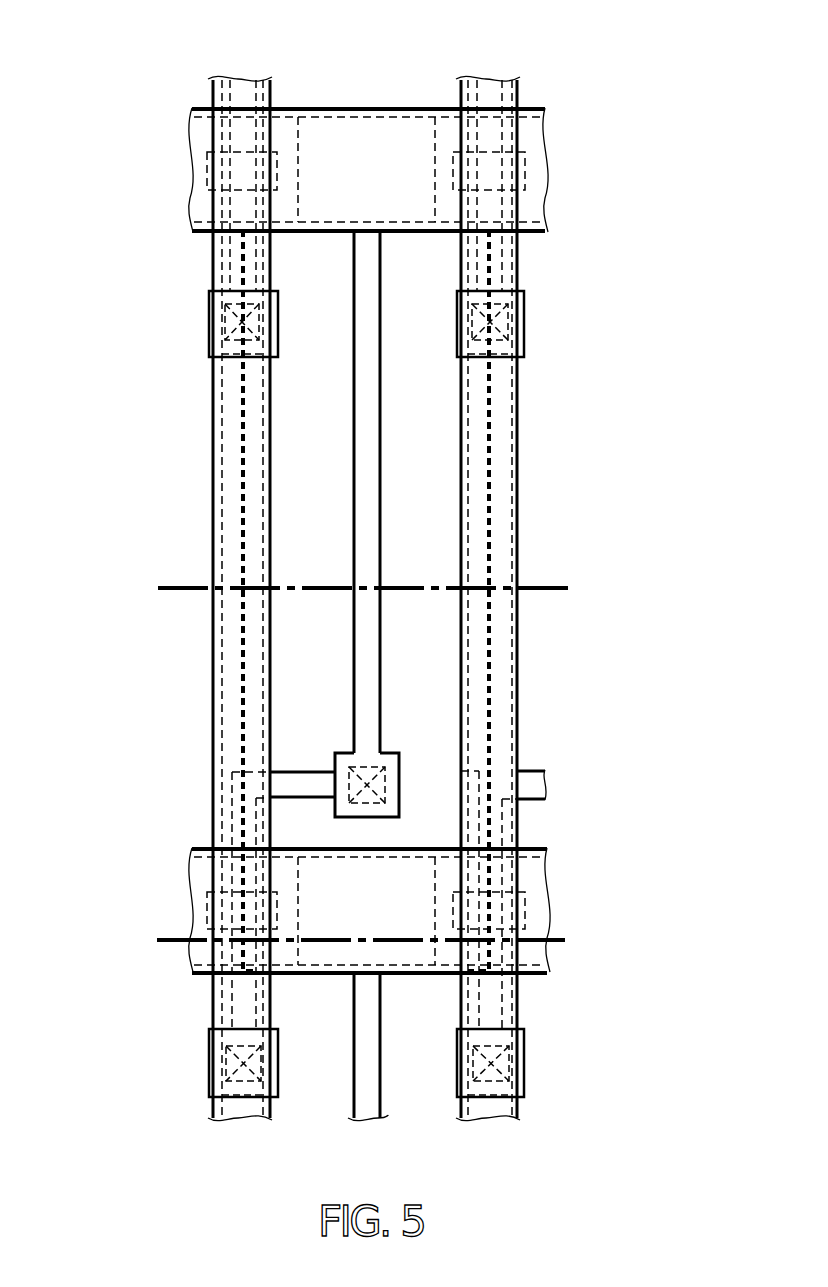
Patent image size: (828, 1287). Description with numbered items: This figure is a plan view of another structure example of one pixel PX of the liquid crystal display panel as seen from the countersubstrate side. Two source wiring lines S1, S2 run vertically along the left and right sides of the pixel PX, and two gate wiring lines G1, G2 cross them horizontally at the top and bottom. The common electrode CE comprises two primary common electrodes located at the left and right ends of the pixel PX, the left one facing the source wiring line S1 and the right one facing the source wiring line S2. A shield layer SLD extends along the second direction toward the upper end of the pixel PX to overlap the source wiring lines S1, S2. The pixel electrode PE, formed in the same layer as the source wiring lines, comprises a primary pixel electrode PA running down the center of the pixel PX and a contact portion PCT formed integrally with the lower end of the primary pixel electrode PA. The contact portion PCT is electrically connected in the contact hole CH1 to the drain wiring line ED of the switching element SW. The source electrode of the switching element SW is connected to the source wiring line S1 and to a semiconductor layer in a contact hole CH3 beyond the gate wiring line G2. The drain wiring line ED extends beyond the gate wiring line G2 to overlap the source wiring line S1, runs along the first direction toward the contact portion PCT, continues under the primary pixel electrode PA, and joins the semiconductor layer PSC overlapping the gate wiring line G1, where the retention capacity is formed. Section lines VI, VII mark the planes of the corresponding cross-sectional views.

The source wiring line S1 is at (244, 92).
The source wiring line S2 is at (487, 92).
The semiconductor layer PSC is at (353, 135).
The gate wiring line G1 is at (540, 170).
The gate wiring line G2 is at (542, 893).
The contact hole CH3 is at (223, 323).
The common electrode CE is at (213, 457).
The shield layer SLD is at (220, 658).
The pixel electrode PE is at (383, 416).
The primary pixel electrode PA is at (365, 473).
The pixel PX is at (498, 706).
The contact hole CH1 is at (386, 763).
The drain wiring line ED is at (305, 785).
The contact portion PCT is at (395, 780).
The switching element SW is at (180, 860).
The section line VI- VI is at (371, 589).
The section line VII- VII is at (370, 942).